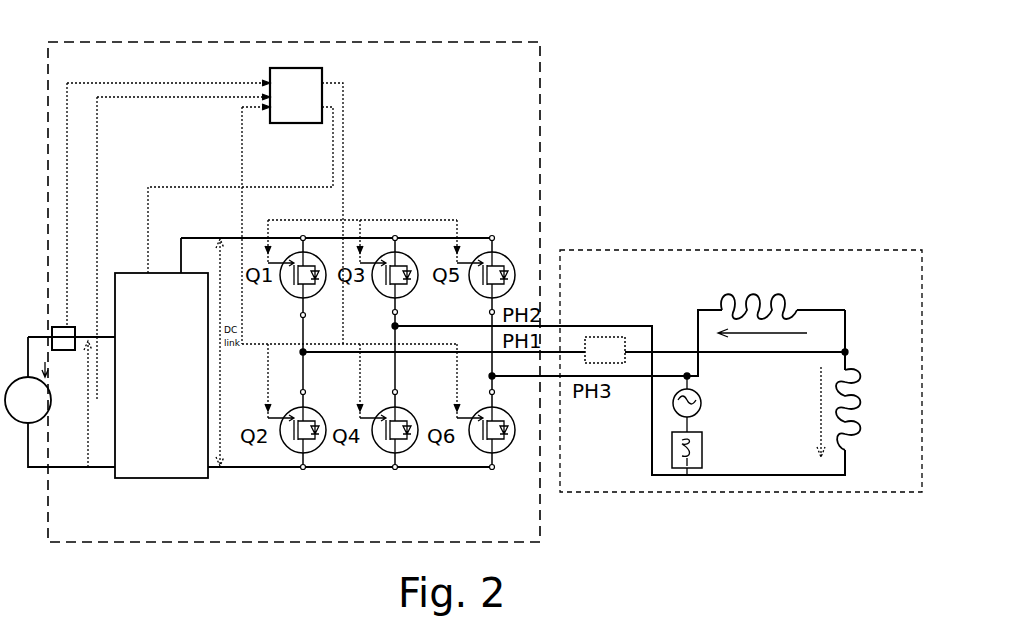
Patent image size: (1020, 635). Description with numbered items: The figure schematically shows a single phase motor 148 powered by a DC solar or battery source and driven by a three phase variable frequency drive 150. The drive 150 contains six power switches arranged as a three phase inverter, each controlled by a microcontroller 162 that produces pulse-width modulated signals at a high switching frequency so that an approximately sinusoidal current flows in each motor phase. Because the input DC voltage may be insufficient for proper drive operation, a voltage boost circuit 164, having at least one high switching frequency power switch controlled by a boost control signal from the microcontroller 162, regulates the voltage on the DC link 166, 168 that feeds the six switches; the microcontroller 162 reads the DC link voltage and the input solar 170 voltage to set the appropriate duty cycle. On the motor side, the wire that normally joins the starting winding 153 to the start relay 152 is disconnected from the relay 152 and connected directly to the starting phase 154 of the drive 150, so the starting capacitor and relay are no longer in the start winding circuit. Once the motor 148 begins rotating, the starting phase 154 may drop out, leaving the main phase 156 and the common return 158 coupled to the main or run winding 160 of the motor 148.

The single phase motor 148 is at (620, 289).
The three phase variable frequency drive 150 is at (488, 154).
The start relay 152 is at (678, 478).
The starting winding 153 is at (850, 404).
The starting phase PH2 154 is at (706, 475).
The main phase PH3 156 is at (697, 379).
The common return PH1 158 is at (656, 350).
The run winding 160 is at (770, 293).
The microcontroller 162 is at (313, 105).
The voltage boost circuit 164 is at (178, 386).
The DC link 166 is at (236, 236).
The DC link 168 is at (283, 470).
The input solar voltage 170 is at (28, 402).